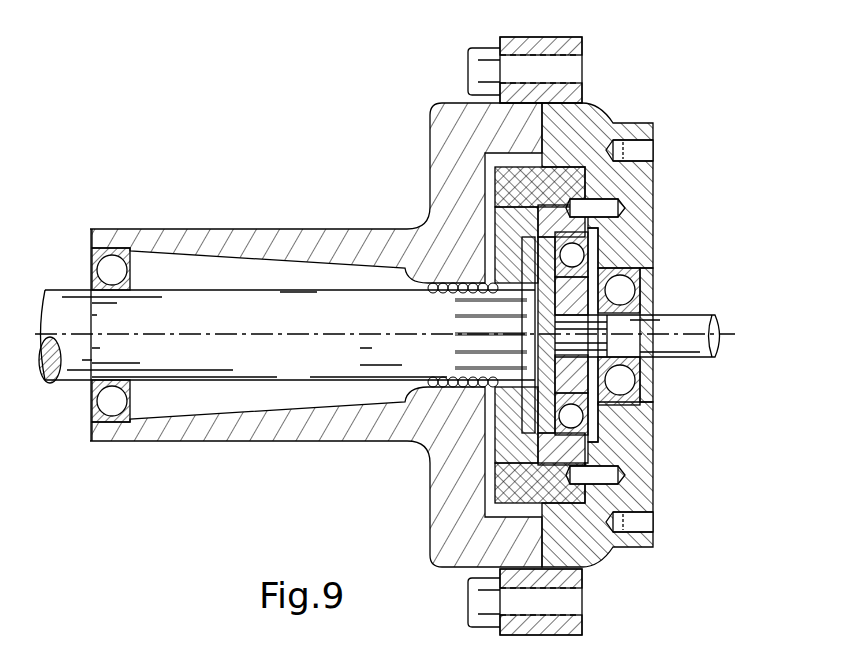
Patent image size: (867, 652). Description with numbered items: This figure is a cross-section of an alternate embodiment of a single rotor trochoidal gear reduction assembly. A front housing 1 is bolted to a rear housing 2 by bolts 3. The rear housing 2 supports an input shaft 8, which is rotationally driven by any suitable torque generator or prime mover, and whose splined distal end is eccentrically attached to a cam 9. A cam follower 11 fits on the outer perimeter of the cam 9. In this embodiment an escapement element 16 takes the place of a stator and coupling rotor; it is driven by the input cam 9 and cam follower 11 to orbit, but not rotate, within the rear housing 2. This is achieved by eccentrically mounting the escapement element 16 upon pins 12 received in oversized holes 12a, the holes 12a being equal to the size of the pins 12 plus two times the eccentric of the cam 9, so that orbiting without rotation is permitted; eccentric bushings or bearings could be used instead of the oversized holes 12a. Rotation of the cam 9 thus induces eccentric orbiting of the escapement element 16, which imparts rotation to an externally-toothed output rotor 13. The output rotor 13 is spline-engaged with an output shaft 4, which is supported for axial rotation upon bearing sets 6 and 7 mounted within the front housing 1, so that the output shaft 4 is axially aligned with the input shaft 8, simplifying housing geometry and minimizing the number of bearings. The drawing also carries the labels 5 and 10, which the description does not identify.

The front housing 1 is at (318, 247).
The rear housing 2 is at (643, 243).
The bolts 3 is at (483, 63).
The output shaft 4 is at (80, 315).
The hub 5 is at (545, 285).
The bearing set 6 is at (110, 268).
The bearing set 7 is at (427, 433).
The input shaft 8 is at (697, 322).
The cam 9 is at (573, 295).
The outer bearing / separation direction 10 is at (580, 118).
The cam follower bearing 11 is at (497, 100).
The pins 12 is at (603, 188).
The oversized holes 12a is at (600, 170).
The output rotor 13 is at (513, 252).
The escapement element 16 is at (527, 190).